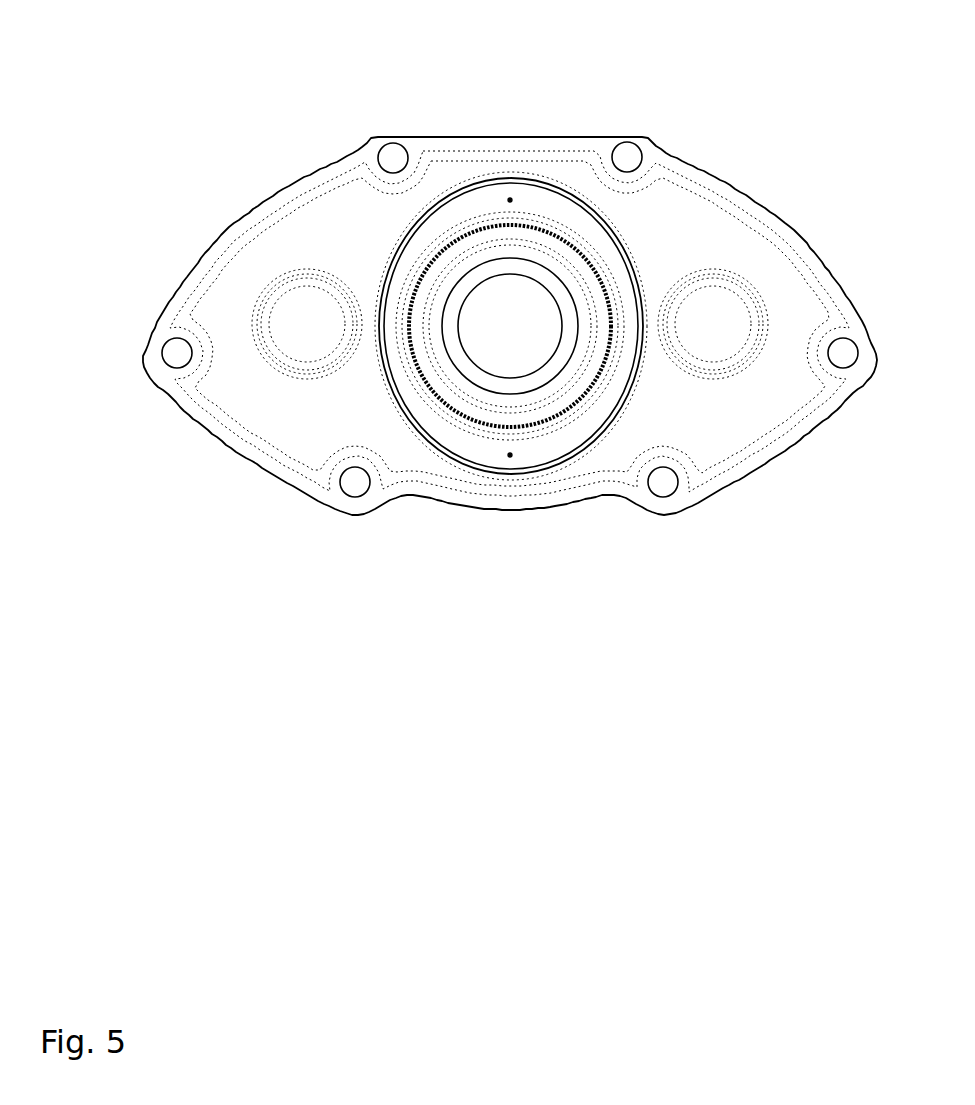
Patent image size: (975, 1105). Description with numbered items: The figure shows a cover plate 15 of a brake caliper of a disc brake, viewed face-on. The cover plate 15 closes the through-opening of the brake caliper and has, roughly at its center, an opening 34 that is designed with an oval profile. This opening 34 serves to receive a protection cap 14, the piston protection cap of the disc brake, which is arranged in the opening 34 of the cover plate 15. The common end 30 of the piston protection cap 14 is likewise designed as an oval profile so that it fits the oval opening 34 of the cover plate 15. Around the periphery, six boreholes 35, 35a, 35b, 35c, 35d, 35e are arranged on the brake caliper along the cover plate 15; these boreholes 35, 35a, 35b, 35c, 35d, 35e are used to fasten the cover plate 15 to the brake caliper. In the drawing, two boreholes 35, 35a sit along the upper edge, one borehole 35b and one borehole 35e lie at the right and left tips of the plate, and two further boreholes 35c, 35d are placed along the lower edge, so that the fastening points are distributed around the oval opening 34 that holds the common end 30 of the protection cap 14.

The protection cap 14 is at (488, 466).
The cover plate 15 is at (764, 207).
The common end 30 is at (482, 195).
The opening 34 is at (552, 163).
The borehole 35 is at (397, 145).
The borehole 35a is at (627, 142).
The borehole 35b is at (850, 367).
The borehole 35c is at (653, 497).
The borehole 35d is at (355, 497).
The borehole 35e is at (172, 368).